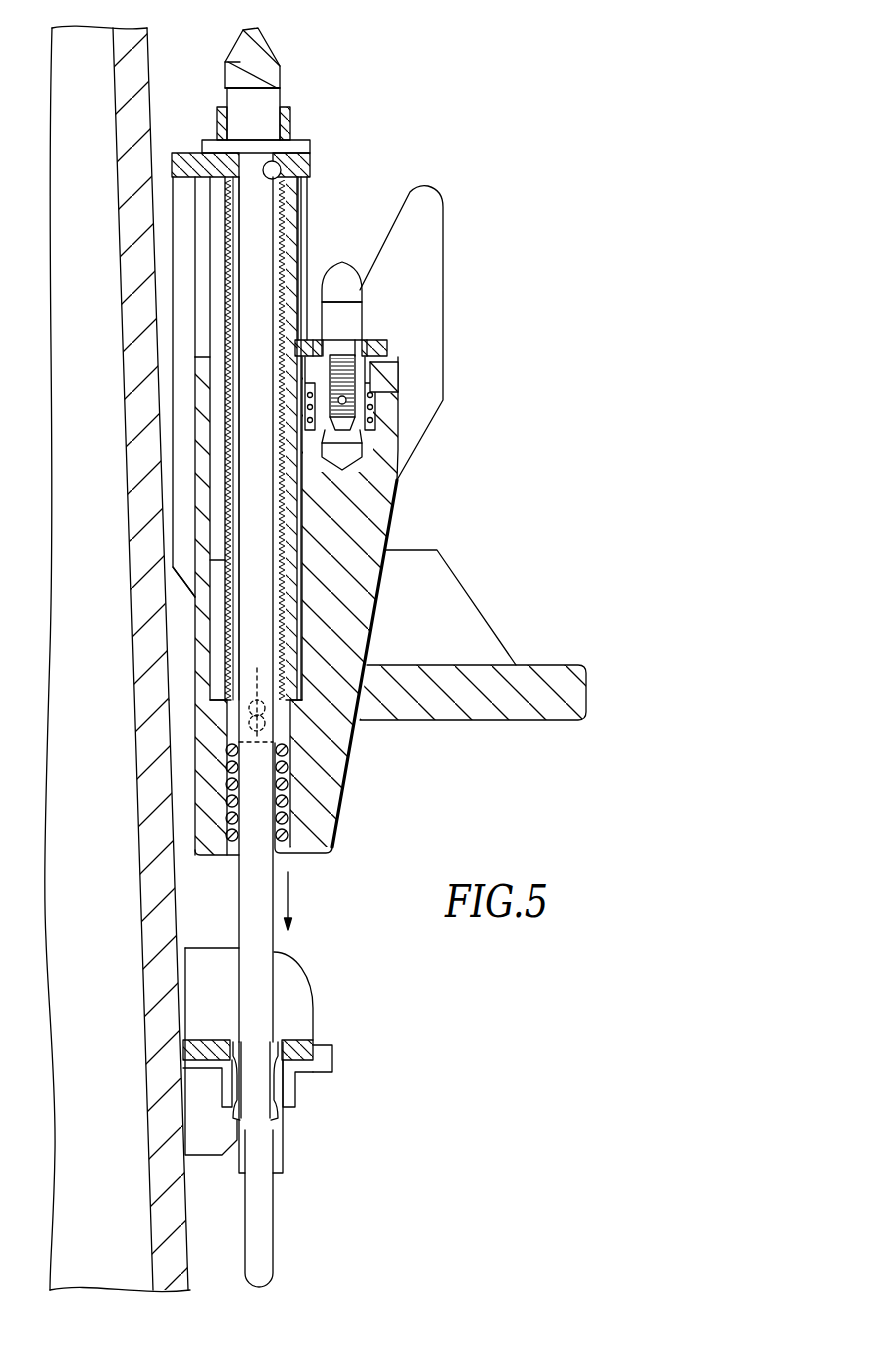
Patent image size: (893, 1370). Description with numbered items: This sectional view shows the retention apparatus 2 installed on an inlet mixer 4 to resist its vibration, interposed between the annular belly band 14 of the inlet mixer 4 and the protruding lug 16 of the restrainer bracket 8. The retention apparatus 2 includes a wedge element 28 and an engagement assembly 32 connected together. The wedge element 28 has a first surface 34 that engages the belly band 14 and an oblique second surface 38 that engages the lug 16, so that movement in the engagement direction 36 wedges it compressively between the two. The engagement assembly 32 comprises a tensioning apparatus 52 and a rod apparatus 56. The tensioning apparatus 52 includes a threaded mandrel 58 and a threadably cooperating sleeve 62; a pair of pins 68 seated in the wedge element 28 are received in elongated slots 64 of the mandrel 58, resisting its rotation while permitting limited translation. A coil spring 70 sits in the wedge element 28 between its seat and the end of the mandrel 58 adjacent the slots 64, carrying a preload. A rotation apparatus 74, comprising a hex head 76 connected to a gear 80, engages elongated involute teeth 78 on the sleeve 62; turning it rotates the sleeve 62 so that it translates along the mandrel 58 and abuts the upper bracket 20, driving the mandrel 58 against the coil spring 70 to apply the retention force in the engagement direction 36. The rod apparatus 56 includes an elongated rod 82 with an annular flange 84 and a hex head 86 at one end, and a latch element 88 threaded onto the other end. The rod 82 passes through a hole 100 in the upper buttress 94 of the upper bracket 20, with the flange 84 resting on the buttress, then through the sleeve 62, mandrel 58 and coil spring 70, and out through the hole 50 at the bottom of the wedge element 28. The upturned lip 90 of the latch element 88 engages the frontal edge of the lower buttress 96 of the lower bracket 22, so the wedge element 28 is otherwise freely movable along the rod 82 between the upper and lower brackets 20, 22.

The retention apparatus 2 is at (375, 643).
The inlet mixer 4 is at (147, 42).
The restrainer bracket 8 is at (456, 552).
The belly band 14 is at (180, 788).
The lug 16 is at (393, 666).
The upper bracket 20 is at (316, 192).
The lower bracket 22 is at (315, 968).
The wedge element 28 is at (394, 515).
The engagement assembly 32 is at (292, 100).
The first surface 34 is at (195, 403).
The engagement direction 36 is at (292, 890).
The second surface 38 is at (354, 760).
The hole 50 is at (238, 852).
The tensioning apparatus 52 is at (366, 327).
The rod apparatus 56 is at (271, 45).
The mandrel 58 is at (288, 697).
The sleeve 62 is at (222, 560).
The elongated slots 64 is at (256, 691).
The pins 68 is at (246, 792).
The coil spring 70 is at (284, 795).
The rotation apparatus 74 is at (351, 271).
The hex head 76 is at (363, 308).
The elongated teeth 78 is at (212, 245).
The gear 80 is at (388, 347).
The rod 82 is at (240, 222).
The flange 84 is at (312, 140).
The hex head 86 is at (281, 74).
The latch element 88 is at (322, 1073).
The lip 90 is at (327, 1045).
The upper buttress 94 is at (192, 153).
The lower buttress 96 is at (228, 1040).
The hole 100 is at (309, 172).